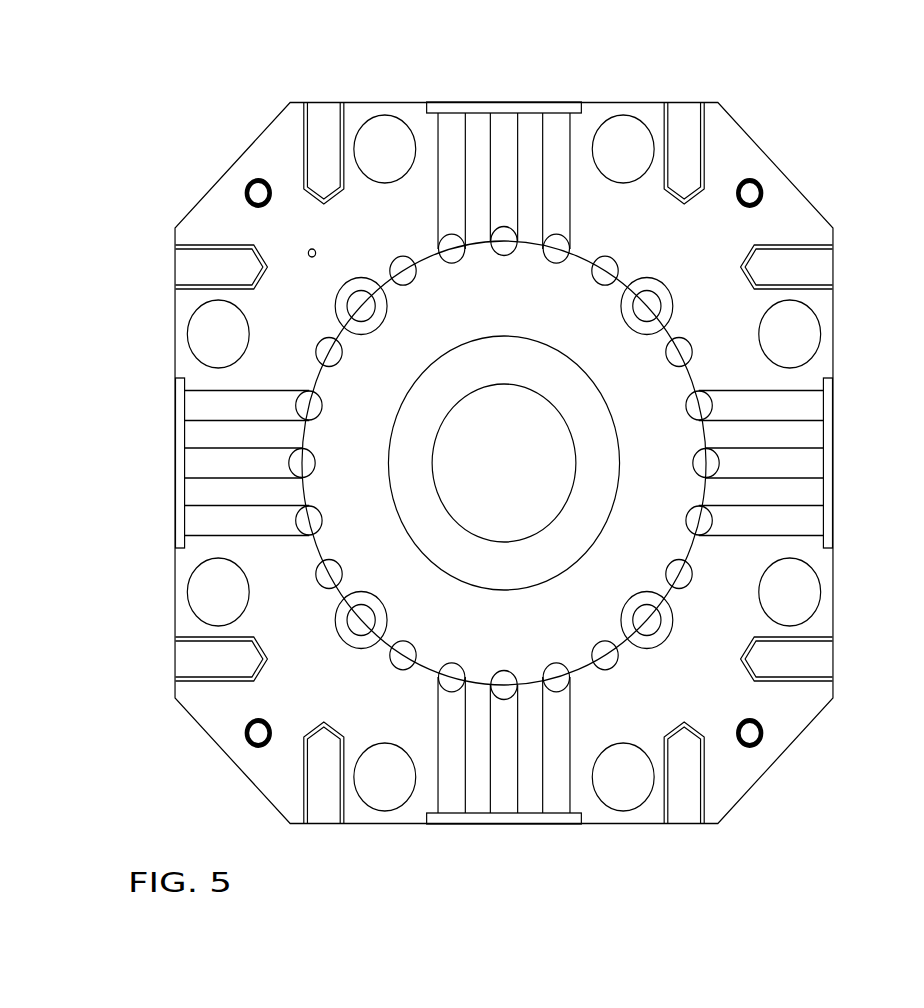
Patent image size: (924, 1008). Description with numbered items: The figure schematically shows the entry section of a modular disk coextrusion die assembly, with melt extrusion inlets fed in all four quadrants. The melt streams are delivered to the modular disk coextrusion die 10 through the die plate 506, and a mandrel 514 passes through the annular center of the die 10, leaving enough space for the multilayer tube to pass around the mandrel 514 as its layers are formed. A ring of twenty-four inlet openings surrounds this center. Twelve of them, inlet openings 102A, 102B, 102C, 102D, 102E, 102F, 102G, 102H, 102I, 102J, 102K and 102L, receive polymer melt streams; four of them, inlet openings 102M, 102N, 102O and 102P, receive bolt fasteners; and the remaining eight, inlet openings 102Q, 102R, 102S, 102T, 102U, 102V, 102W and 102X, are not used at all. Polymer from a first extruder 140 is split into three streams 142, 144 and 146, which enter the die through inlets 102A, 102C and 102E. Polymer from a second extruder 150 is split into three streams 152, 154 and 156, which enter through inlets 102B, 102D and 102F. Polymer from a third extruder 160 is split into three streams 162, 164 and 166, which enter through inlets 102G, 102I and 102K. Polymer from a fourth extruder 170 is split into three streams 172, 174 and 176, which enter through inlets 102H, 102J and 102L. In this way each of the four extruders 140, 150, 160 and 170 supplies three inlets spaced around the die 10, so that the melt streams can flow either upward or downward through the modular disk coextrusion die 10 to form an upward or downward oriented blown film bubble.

The modular disk coextrusion die 10 is at (392, 400).
The mandrel 514 is at (526, 500).
The die plate 506 is at (740, 777).
The first extruder 140 is at (180, 431).
The stream 142 is at (202, 403).
The stream 144 is at (202, 463).
The stream 146 is at (202, 521).
The second extruder 150 is at (828, 431).
The stream 152 is at (805, 522).
The stream 154 is at (805, 464).
The stream 156 is at (807, 404).
The third extruder 160 is at (528, 820).
The stream 162 is at (448, 792).
The stream 164 is at (503, 790).
The stream 166 is at (555, 795).
The fourth extruder 170 is at (530, 107).
The stream 172 is at (556, 132).
The stream 174 is at (503, 135).
The stream 176 is at (452, 135).
The inlet opening 102A is at (318, 393).
The inlet opening 102B is at (693, 508).
The inlet opening 102C is at (309, 446).
The inlet opening 102D is at (700, 450).
The inlet opening 102E is at (310, 505).
The inlet opening 102F is at (690, 394).
The inlet opening 102G is at (452, 662).
The inlet opening 102H is at (555, 262).
The inlet opening 102I is at (503, 668).
The inlet opening 102J is at (503, 255).
The inlet opening 102K is at (555, 662).
The inlet opening 102L is at (452, 262).
The inlet opening 102M is at (360, 277).
The inlet opening 102N is at (670, 645).
The inlet opening 102O is at (340, 642).
The inlet opening 102P is at (666, 286).
The inlet opening 102Q is at (313, 351).
The inlet opening 102R is at (678, 562).
The inlet opening 102S is at (327, 560).
The inlet opening 102T is at (697, 341).
The inlet opening 102U is at (393, 670).
The inlet opening 102V is at (612, 253).
The inlet opening 102W is at (605, 672).
The inlet opening 102X is at (390, 258).